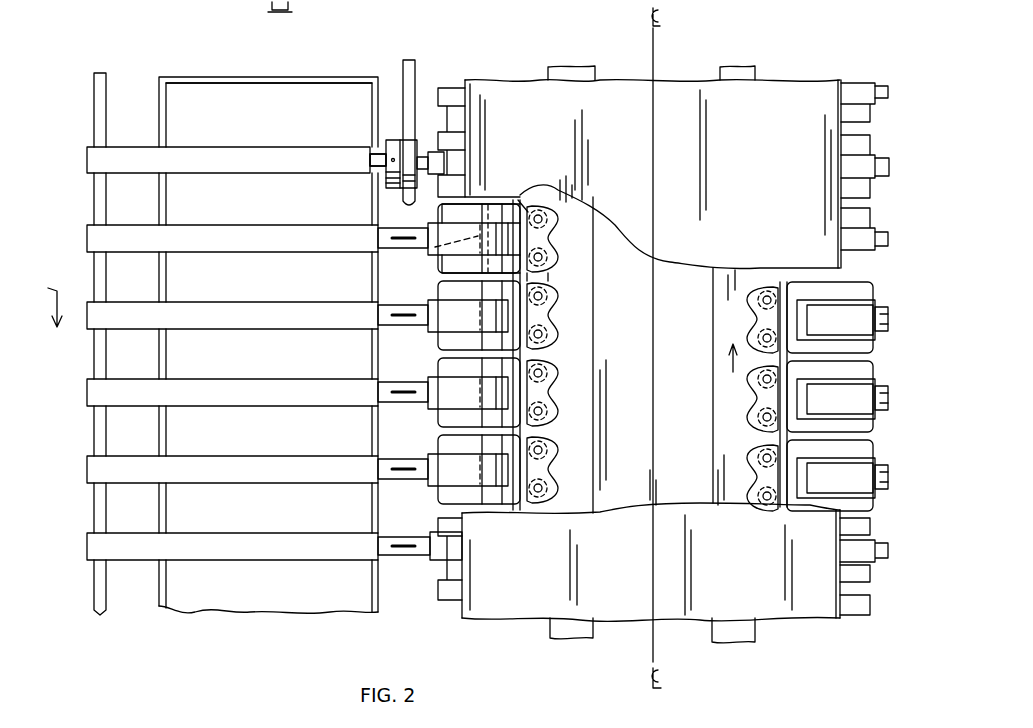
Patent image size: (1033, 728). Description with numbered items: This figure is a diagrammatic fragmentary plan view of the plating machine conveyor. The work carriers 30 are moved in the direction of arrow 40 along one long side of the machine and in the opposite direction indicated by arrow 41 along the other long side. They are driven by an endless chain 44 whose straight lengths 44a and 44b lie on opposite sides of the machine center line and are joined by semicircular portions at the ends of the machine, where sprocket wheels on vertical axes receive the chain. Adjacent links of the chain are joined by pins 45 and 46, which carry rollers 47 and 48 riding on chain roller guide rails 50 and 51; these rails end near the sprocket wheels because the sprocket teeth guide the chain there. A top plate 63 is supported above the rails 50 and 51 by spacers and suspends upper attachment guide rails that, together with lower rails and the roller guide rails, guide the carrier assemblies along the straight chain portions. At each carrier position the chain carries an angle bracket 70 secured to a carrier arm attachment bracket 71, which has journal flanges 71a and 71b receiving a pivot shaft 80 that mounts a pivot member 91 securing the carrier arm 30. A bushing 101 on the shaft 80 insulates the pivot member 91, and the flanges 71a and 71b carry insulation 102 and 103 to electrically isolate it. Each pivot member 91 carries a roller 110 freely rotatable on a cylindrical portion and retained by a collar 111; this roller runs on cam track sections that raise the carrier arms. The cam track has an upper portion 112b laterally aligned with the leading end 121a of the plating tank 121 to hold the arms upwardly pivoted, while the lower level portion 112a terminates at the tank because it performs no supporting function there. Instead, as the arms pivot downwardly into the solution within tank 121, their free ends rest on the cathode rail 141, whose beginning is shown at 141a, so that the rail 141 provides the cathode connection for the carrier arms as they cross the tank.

The work carrier 30 is at (207, 162).
The arrow 40 is at (40, 302).
The arrow 41 is at (713, 360).
The endless chain 44 is at (558, 322).
The straight length of chain 44a is at (558, 392).
The straight length of chain 44b is at (750, 305).
The pin 45 is at (555, 257).
The pin 46 is at (548, 219).
The roller 47 is at (545, 278).
The roller 48 is at (567, 185).
The chain roller guide rail 50 is at (580, 470).
The chain roller guide rail 51 is at (720, 406).
The top plate 63 is at (686, 92).
The angle bracket 70 is at (530, 208).
The carrier arm attachment bracket 71 is at (518, 200).
The journal flange 71a is at (450, 205).
The journal flange 71b is at (450, 268).
The pivot shaft 80 is at (497, 225).
The pivot member 91 is at (430, 238).
The bushing 101 is at (440, 246).
The insulation 102 is at (440, 217).
The insulation 103 is at (474, 315).
The roller 110 is at (403, 140).
The collar 111 is at (388, 150).
The lower level portion of cam track 112a is at (410, 192).
The upper portion of cam rail section 112b is at (410, 60).
The plating tank 121 is at (205, 76).
The leading end of tank 121a is at (298, 77).
The cathode rail 141 is at (95, 455).
The beginning of cathode rail 141a is at (102, 72).